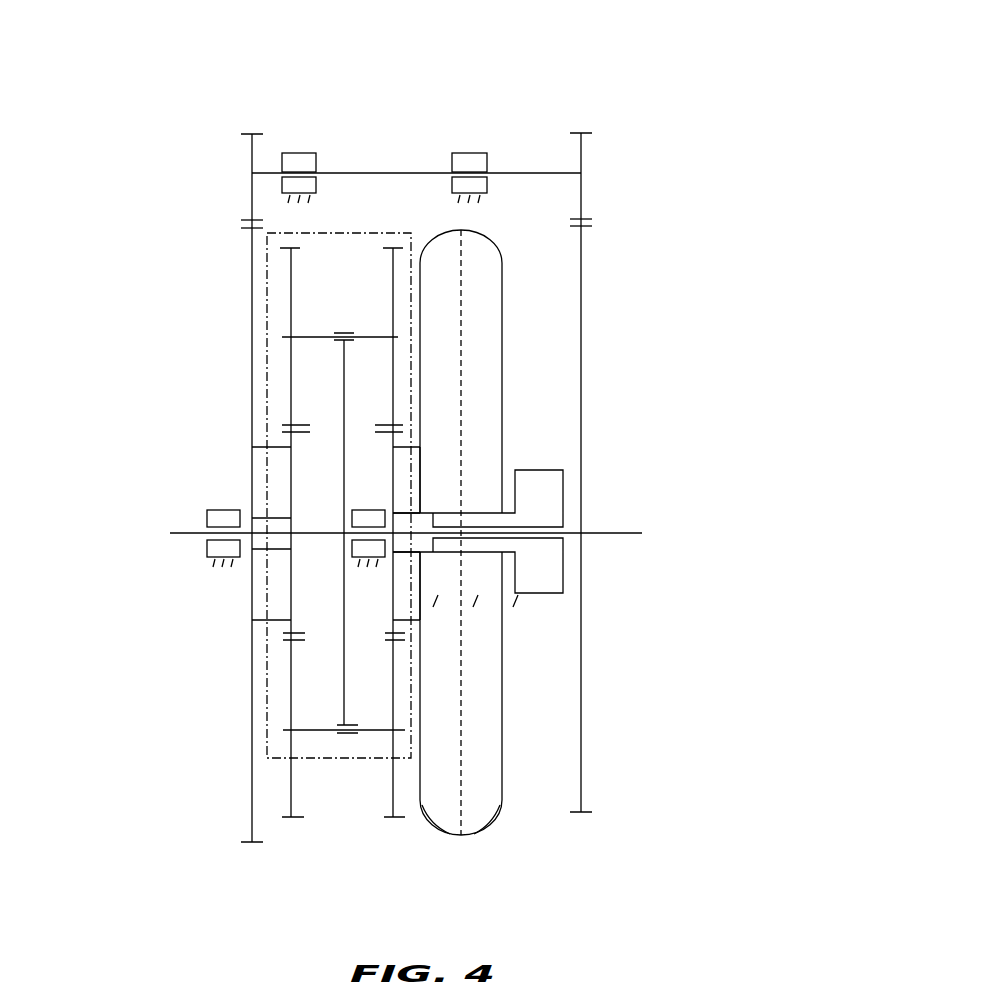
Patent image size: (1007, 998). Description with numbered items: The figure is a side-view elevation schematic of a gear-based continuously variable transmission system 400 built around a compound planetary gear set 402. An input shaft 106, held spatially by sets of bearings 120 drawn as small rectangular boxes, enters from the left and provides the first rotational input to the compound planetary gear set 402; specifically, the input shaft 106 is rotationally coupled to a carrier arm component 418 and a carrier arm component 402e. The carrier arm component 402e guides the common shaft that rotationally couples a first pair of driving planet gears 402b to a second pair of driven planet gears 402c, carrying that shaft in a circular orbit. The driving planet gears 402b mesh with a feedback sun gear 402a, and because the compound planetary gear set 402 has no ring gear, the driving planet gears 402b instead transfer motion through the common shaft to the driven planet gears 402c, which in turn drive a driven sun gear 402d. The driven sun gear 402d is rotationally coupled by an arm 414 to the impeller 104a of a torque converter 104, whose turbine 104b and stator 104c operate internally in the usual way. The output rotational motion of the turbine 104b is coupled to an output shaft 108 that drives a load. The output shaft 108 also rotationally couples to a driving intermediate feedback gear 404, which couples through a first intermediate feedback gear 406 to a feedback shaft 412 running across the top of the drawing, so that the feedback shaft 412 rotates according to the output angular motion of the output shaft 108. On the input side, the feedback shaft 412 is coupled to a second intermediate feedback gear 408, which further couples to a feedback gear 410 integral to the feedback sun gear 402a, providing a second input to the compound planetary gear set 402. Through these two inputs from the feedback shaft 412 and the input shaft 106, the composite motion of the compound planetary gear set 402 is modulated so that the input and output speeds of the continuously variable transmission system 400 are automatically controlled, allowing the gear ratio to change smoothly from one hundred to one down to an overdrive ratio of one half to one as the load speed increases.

The continuously variable transmission system 400 is at (662, 96).
The feedback shaft 412 is at (340, 172).
The second intermediate feedback gear 408 is at (243, 220).
The feedback gear 410 is at (243, 228).
The first intermediate feedback gear 406 is at (587, 219).
The driving intermediate feedback gear 404 is at (587, 226).
The compound planetary gear set 402 is at (265, 325).
The feedback sun gear 402a is at (300, 432).
The driving planet gears 402b is at (300, 425).
The driven planet gears 402c is at (385, 425).
The driven sun gear 402d is at (385, 432).
The carrier arm component 402e is at (340, 332).
The arm 414 is at (400, 450).
The carrier arm component 418 is at (343, 588).
The torque converter 104 is at (500, 318).
The impeller 104a is at (438, 820).
The turbine 104b is at (490, 820).
The stator 104c is at (535, 468).
The bearings 120 is at (211, 505).
The input shaft 106 is at (181, 536).
The output shaft 108 is at (622, 536).